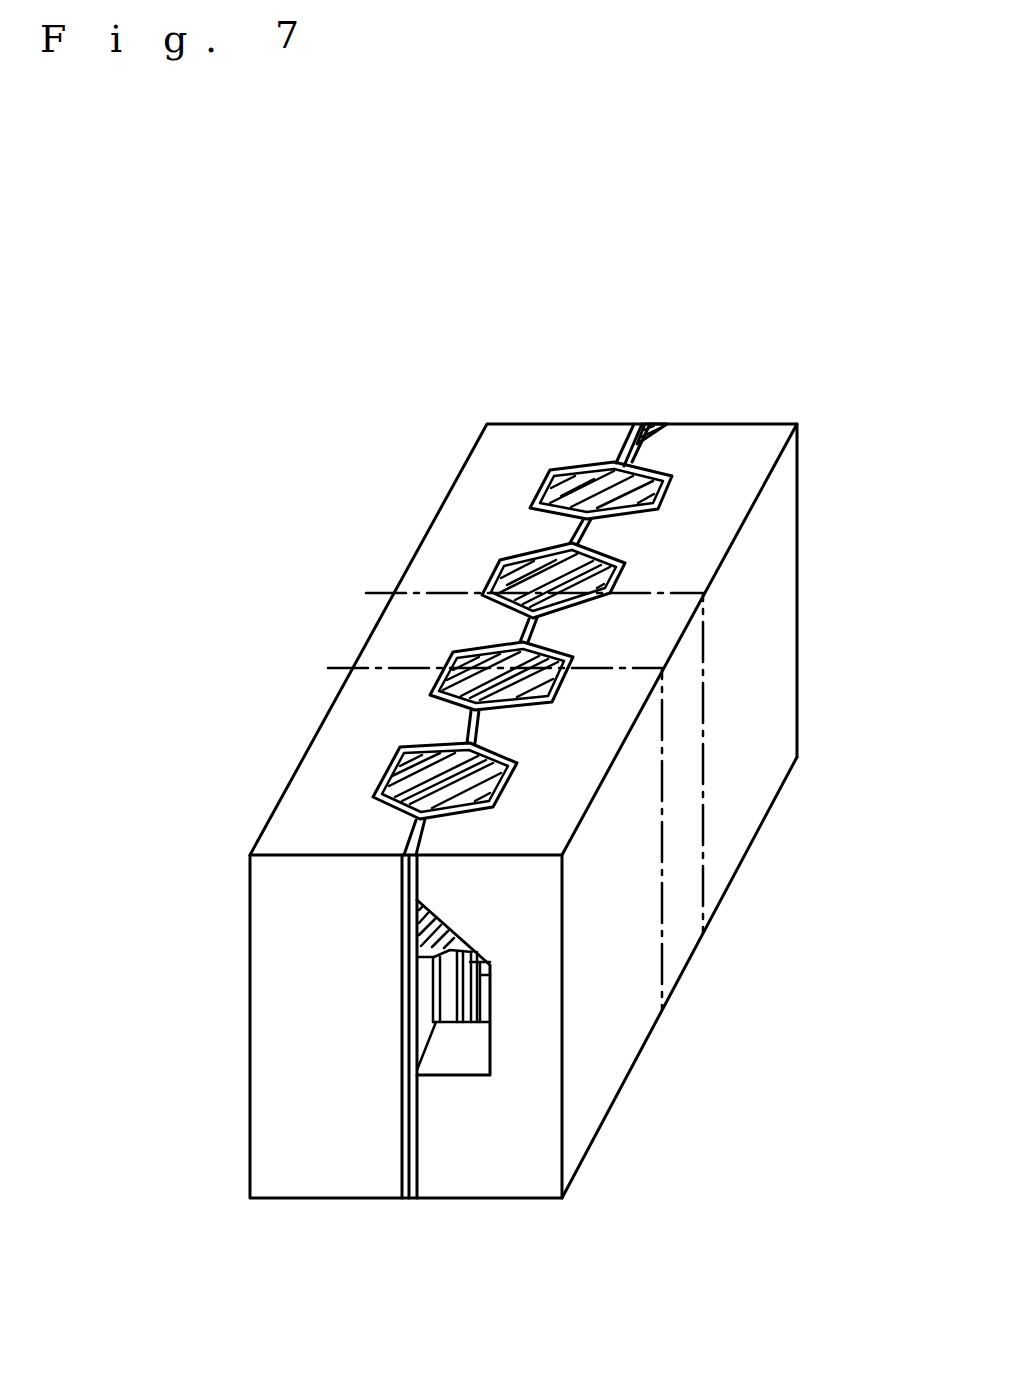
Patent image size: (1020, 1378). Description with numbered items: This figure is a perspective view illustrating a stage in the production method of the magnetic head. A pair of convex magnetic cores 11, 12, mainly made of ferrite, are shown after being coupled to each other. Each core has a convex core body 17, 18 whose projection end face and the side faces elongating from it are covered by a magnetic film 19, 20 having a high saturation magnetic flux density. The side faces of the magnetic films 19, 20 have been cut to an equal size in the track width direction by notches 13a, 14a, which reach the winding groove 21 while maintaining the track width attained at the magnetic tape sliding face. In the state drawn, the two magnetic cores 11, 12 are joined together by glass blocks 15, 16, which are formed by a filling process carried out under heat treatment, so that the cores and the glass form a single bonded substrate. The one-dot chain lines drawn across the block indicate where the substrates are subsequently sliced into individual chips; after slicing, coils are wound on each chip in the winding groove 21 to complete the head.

The convex magnetic core 11 is at (798, 630).
The convex magnetic core 12 is at (298, 767).
The notch 13a is at (453, 658).
The notch 14a is at (590, 594).
The glass block 15 is at (553, 697).
The glass block 16 is at (500, 558).
The convex core body 17 is at (603, 1082).
The convex core body 18 is at (280, 1058).
The magnetic film 19 is at (640, 447).
The magnetic film 20 is at (620, 447).
The winding groove 21 is at (490, 1047).